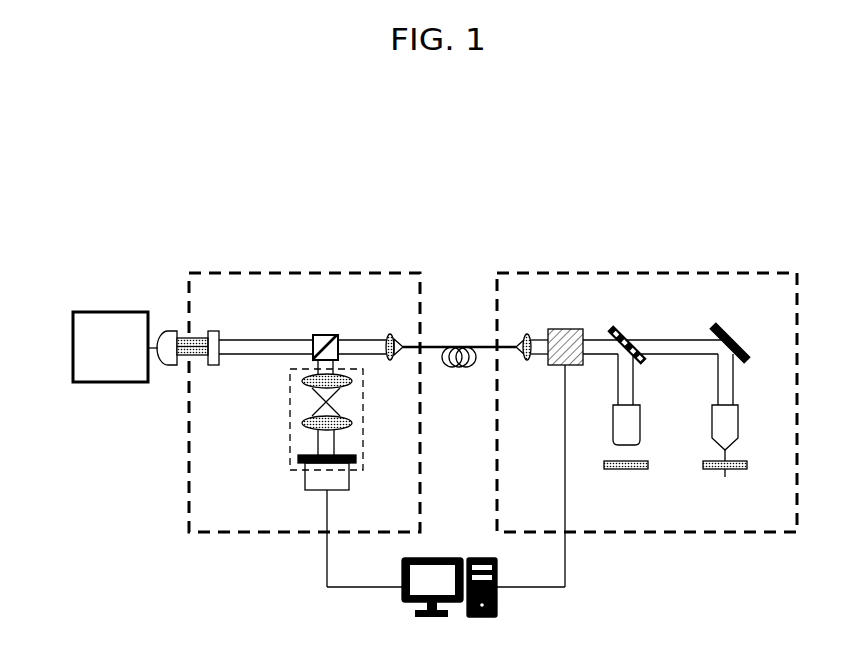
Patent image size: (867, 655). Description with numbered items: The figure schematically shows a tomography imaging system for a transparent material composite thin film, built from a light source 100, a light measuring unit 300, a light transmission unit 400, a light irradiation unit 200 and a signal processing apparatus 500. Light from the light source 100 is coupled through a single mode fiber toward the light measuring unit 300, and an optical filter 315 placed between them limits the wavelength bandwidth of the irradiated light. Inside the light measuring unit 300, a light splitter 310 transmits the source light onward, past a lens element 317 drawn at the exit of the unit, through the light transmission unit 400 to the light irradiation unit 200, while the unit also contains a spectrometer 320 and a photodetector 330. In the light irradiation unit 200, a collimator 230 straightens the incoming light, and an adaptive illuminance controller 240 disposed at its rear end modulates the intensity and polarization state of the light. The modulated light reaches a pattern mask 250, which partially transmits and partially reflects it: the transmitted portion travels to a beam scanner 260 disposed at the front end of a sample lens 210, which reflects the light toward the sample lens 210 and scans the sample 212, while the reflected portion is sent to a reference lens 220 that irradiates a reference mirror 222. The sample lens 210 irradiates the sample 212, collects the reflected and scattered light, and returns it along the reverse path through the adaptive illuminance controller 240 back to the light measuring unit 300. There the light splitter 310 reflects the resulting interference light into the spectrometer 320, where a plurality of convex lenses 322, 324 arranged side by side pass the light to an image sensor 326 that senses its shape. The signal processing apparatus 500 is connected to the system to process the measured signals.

The light source 100 is at (113, 312).
The light irradiation unit 200 is at (681, 272).
The sample lens 210 is at (739, 421).
The sample 212 is at (738, 470).
The reference lens 220 is at (641, 421).
The reference mirror 222 is at (627, 470).
The collimator 230 is at (528, 362).
The adaptive illuminance controller 240 is at (566, 329).
The pattern mask 250 is at (620, 331).
The beam scanner 260 is at (730, 327).
The light measuring unit 300 is at (330, 272).
The light splitter 310 is at (323, 335).
The optical filter 315 is at (219, 333).
The collimating lens 317 is at (388, 334).
The spectrometer 320 is at (321, 417).
The lens 322 is at (302, 380).
The lens 324 is at (302, 422).
The image sensor 326 is at (298, 458).
The photodetector 330 is at (305, 485).
The light transmission unit 400 is at (463, 370).
The signal processing apparatus 500 is at (497, 607).